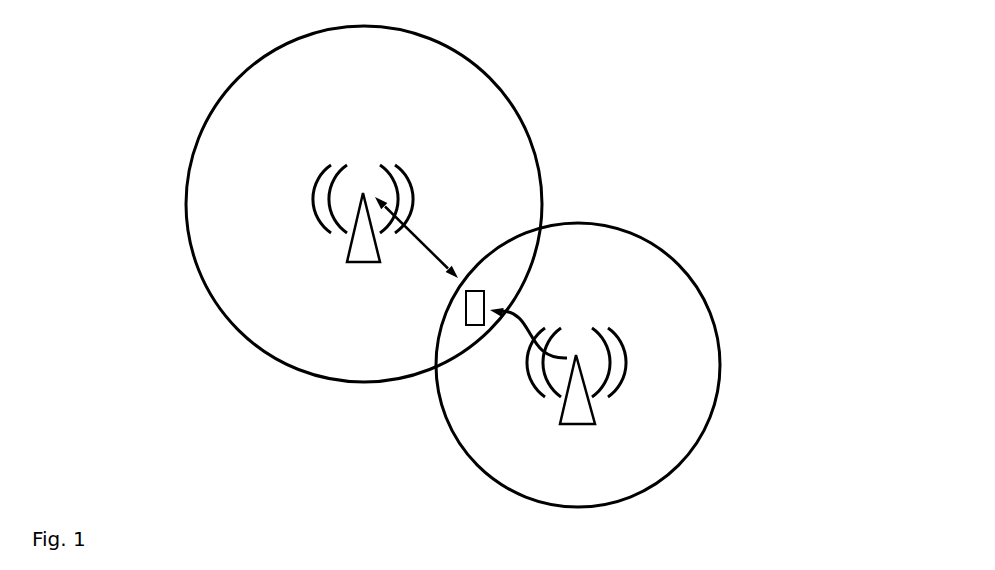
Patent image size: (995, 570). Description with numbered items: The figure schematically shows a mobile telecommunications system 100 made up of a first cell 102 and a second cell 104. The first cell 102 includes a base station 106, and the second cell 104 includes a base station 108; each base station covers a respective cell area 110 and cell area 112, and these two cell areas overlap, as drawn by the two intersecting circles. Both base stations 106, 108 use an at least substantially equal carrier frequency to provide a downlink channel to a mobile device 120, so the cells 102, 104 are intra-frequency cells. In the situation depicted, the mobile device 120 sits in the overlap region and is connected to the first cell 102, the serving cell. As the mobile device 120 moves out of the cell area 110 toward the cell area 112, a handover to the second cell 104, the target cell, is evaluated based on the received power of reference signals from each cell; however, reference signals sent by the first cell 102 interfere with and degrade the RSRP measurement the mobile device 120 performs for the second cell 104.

The mobile telecommunications system 100 is at (130, 21).
The first cell 102 is at (528, 85).
The second cell 104 is at (722, 263).
The base station 106 is at (363, 262).
The base station 108 is at (577, 424).
The cell area 110 is at (238, 332).
The cell area 112 is at (445, 425).
The mobile device 120 is at (476, 291).